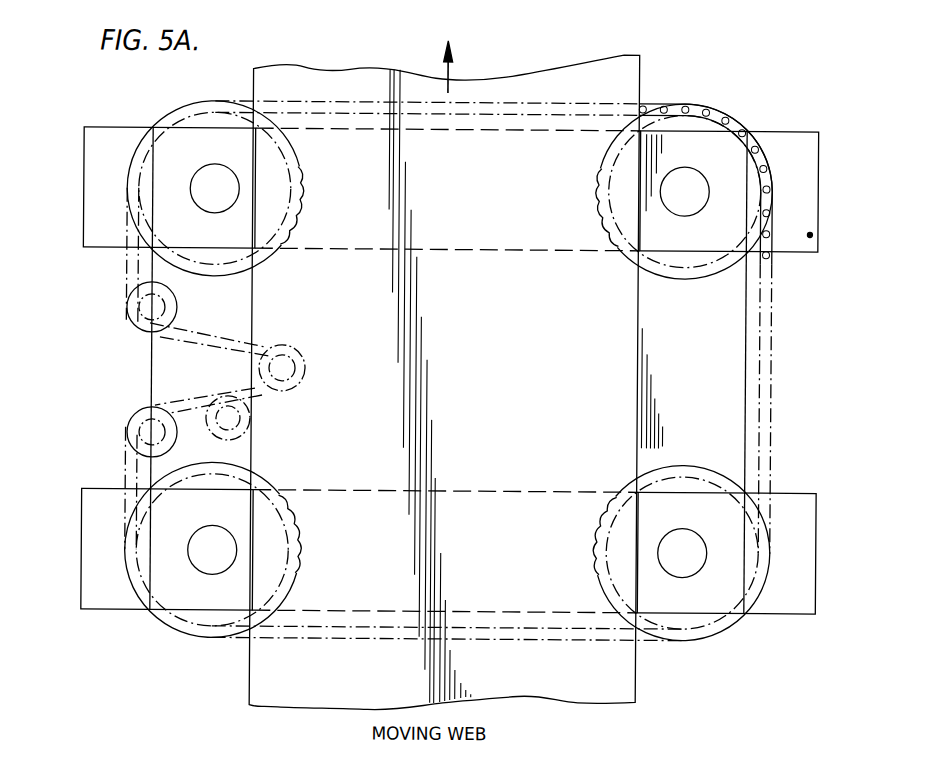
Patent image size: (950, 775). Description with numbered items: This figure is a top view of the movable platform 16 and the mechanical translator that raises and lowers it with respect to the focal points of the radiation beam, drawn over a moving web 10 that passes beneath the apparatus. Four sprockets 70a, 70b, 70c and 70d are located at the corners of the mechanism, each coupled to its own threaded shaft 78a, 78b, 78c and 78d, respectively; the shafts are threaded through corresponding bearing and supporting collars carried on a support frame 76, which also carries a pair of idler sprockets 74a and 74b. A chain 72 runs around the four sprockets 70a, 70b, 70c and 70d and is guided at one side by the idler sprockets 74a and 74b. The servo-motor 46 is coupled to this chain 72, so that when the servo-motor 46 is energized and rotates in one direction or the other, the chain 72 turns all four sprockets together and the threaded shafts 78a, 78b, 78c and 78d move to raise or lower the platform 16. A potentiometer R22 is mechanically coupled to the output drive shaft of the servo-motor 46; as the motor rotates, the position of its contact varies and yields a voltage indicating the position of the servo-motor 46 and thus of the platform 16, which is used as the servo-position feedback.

The moving web 10 is at (638, 82).
The platform 16 is at (746, 388).
The servo-motor 46 is at (298, 353).
The sprocket 70a is at (761, 185).
The sprocket 70b is at (749, 563).
The sprocket 70c is at (148, 574).
The sprocket 70d is at (146, 192).
The chain 72 is at (765, 241).
The idler sprocket 74a is at (127, 318).
The idler sprocket 74b is at (129, 426).
The support frame 76 is at (812, 233).
The threaded shaft 78a is at (703, 178).
The threaded shaft 78b is at (706, 546).
The threaded shaft 78c is at (189, 552).
The threaded shaft 78d is at (191, 182).
The potentiometer R22 is at (240, 440).